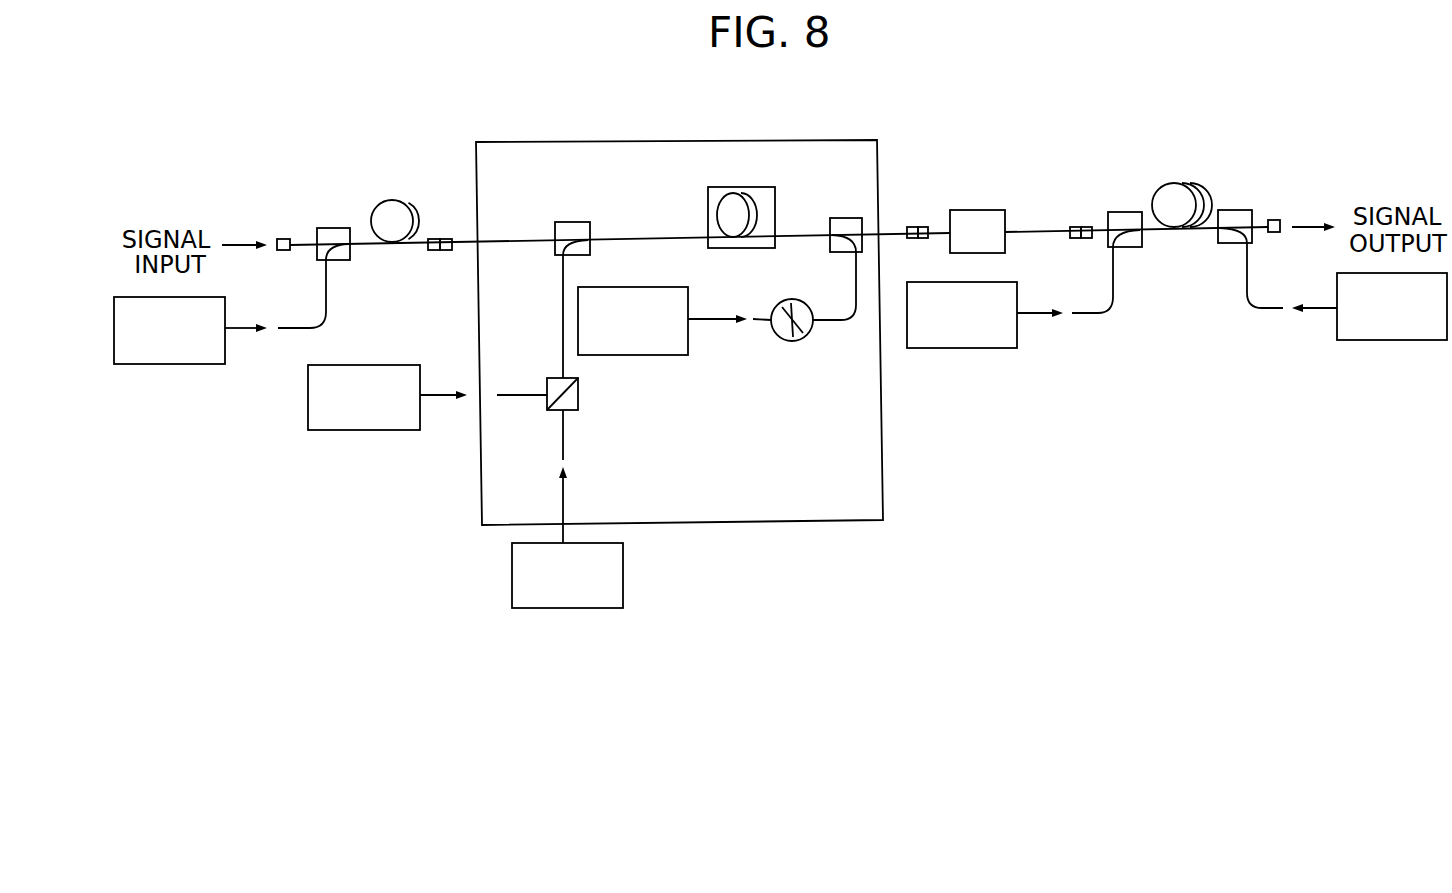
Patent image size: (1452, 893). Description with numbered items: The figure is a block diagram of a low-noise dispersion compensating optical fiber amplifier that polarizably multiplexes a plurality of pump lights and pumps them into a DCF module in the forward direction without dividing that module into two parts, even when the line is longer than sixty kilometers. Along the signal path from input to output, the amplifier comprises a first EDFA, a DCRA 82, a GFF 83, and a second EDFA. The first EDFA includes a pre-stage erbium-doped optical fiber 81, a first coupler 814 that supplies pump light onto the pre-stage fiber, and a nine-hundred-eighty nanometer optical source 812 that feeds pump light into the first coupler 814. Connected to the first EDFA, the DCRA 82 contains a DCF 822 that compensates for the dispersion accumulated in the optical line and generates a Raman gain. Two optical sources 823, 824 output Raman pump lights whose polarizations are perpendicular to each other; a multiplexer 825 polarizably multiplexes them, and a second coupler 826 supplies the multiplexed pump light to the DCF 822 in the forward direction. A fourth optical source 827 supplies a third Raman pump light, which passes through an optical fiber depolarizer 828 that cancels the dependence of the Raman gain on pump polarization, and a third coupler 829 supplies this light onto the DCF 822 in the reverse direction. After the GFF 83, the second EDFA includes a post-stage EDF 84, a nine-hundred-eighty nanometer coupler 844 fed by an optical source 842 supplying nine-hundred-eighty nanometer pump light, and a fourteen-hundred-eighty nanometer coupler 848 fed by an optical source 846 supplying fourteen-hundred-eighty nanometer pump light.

The pre-stage erbium-doped optical fiber 81 is at (417, 213).
The 980 nm optical source 812 is at (175, 364).
The first coupler 814 is at (333, 228).
The DCRA 82 is at (818, 140).
The DCF 822 is at (740, 248).
The optical source 823 is at (370, 430).
The optical source 824 is at (623, 573).
The multiplexer 825 is at (577, 410).
The second coupler 826 is at (572, 222).
The fourth optical source 827 is at (633, 355).
The optical fiber depolarizer 828 is at (813, 323).
The third coupler 829 is at (838, 253).
The GFF 83 is at (977, 210).
The post-stage EDF 84 is at (1207, 200).
The optical source 842 is at (968, 348).
The 980/1550 nm coupler 844 is at (1123, 211).
The optical source 846 is at (1400, 340).
The 1480/1550 nm coupler 848 is at (1230, 247).